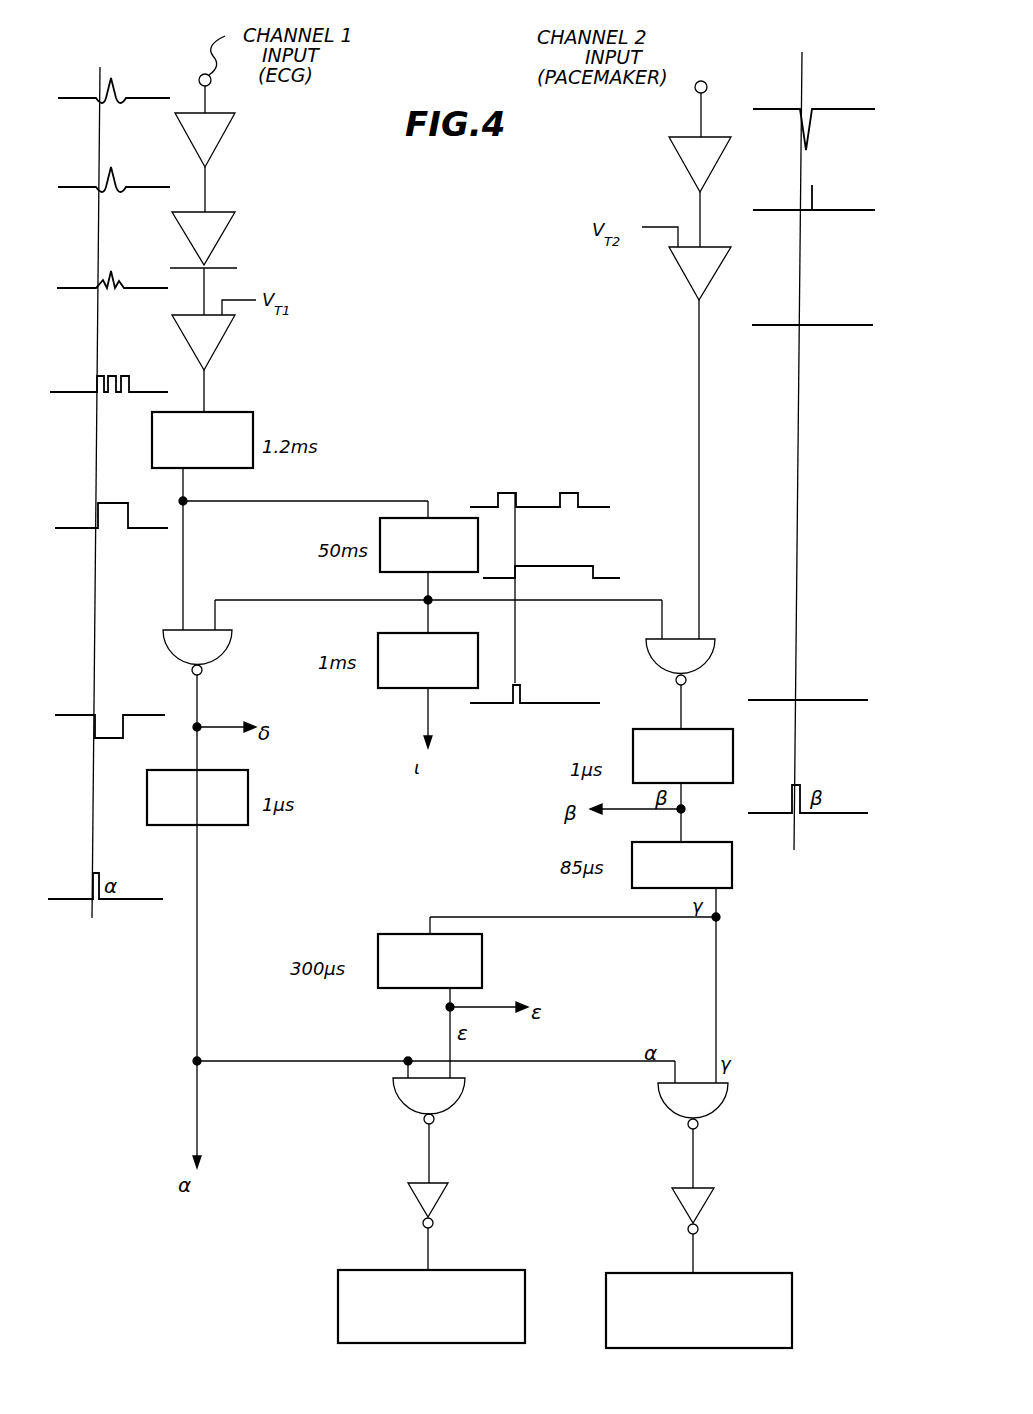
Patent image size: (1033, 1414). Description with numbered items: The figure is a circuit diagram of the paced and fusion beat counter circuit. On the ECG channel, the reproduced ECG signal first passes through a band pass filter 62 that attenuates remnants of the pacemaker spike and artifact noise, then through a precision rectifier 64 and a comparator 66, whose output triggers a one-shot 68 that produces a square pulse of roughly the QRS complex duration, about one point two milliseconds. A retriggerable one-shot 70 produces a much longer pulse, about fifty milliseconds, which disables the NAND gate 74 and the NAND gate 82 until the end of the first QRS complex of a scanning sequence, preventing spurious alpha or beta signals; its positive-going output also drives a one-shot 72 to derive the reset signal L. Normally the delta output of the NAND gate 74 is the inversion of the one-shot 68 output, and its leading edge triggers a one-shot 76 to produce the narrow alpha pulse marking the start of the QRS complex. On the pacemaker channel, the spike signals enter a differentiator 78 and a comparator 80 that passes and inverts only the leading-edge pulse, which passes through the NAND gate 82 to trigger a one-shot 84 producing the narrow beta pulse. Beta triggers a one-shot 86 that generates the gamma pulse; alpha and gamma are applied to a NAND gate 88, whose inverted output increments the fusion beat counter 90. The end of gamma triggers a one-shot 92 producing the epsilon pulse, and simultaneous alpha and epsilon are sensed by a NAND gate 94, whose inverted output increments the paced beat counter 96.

The band pass filter 62 is at (215, 135).
The precision rectifier 64 is at (212, 232).
The comparator 66 is at (214, 338).
The one-shot 68 is at (230, 412).
The retriggerable one-shot 70 is at (446, 516).
The one-shot 72 is at (488, 622).
The NAND gate 74 is at (212, 645).
The one-shot 76 is at (240, 826).
The differentiator 78 is at (668, 150).
The comparator 80 is at (680, 266).
The NAND gate 82 is at (650, 650).
The one-shot 84 is at (656, 707).
The one-shot 86 is at (732, 858).
The NAND gate 88 is at (708, 1103).
The fusion beat counter 90 is at (742, 1273).
The one-shot 92 is at (482, 942).
The NAND gate 94 is at (446, 1098).
The paced beat counter 96 is at (488, 1270).